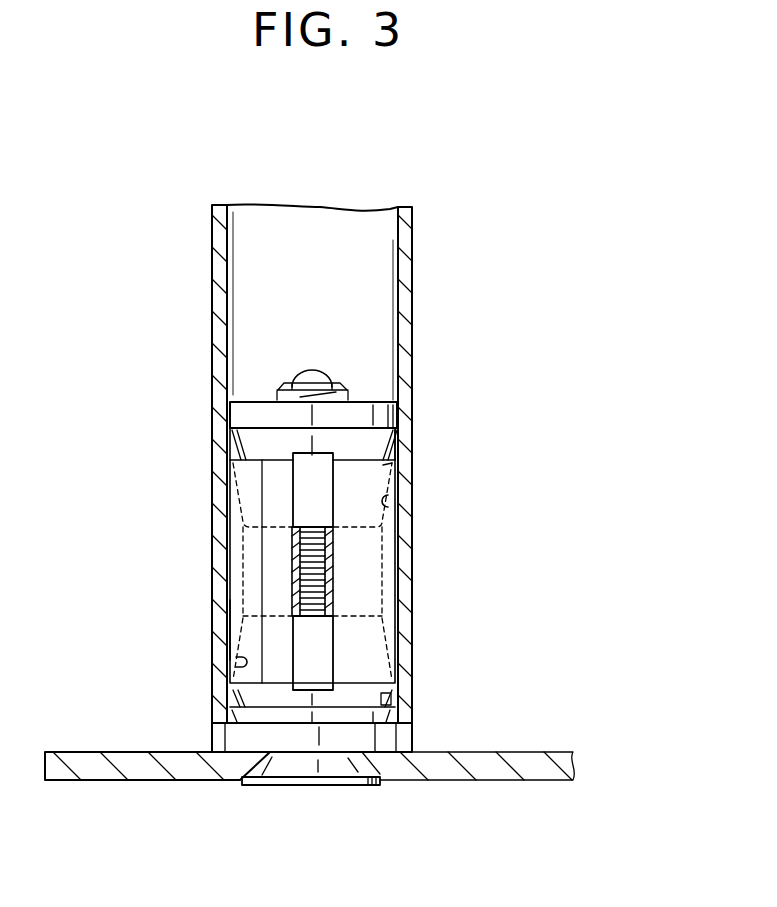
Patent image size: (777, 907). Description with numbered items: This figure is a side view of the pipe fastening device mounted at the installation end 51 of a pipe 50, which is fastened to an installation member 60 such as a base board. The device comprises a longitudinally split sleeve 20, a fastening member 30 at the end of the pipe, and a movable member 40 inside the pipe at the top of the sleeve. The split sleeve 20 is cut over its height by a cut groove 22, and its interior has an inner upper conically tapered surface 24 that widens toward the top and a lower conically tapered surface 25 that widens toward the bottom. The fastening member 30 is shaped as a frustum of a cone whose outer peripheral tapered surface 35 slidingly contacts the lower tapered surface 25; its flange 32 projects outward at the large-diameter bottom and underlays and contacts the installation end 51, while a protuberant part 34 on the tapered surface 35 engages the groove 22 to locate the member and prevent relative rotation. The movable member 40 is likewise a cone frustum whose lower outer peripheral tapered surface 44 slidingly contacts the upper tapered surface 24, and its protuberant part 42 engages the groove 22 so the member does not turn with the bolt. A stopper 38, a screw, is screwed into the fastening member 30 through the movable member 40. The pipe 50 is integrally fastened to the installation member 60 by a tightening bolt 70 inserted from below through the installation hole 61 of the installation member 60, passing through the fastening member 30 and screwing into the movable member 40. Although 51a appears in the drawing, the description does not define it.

The split sleeve 20 is at (240, 498).
The cut groove 22 is at (293, 565).
The inner upper conically tapered surface 24 is at (405, 508).
The lower conically tapered surface 25 is at (232, 663).
The fastening member 30 is at (392, 695).
The flange 32 is at (227, 738).
The protuberant part 34 is at (323, 630).
The outer peripheral tapered surface 35 is at (238, 628).
The stopper 38 is at (317, 377).
The movable member 40 is at (252, 407).
The protuberant part 42 is at (323, 484).
The lower outer peripheral tapered surface 44 is at (405, 478).
The pipe 50 is at (412, 300).
The installation end 51 is at (408, 578).
The lower end of post wall 51a is at (400, 735).
The installation member 60 is at (537, 782).
The installation hole 61 is at (368, 787).
The tightening bolt 70 is at (343, 787).